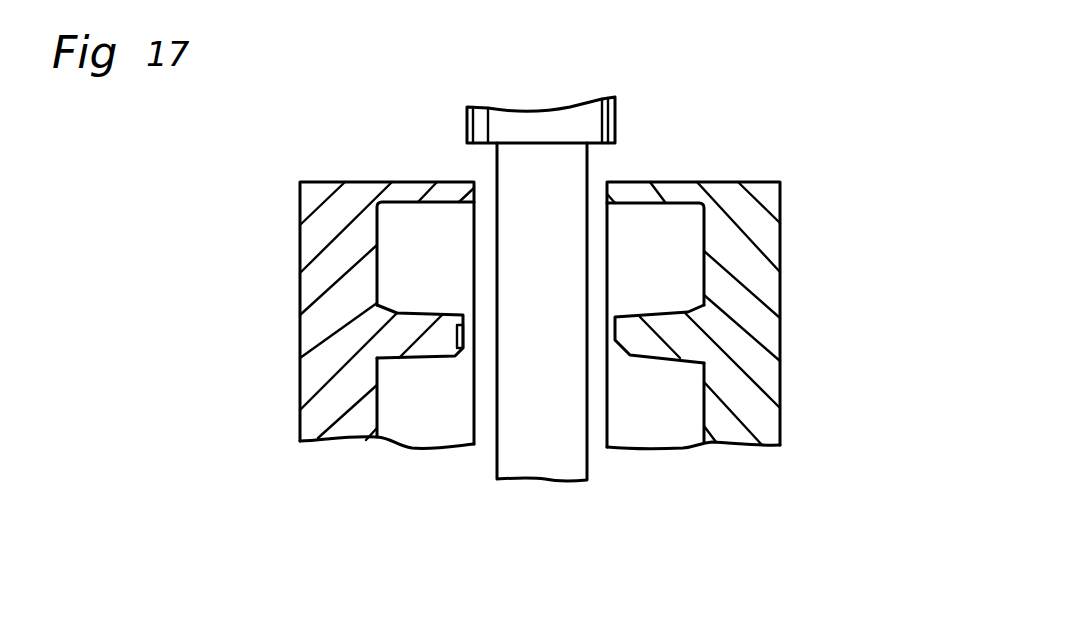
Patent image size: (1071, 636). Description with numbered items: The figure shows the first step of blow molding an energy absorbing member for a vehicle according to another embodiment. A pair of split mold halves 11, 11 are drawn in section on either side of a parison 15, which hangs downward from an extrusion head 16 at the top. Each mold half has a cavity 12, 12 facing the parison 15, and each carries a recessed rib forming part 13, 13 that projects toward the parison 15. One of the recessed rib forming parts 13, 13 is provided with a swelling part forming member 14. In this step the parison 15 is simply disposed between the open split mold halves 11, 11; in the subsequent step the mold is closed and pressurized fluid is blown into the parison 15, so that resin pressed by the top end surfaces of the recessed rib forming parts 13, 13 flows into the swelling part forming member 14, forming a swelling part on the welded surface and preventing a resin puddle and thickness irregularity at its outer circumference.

The split mold half 11 is at (318, 234).
The cavity 12 is at (377, 253).
The recessed rib forming part 13 is at (420, 345).
The swelling part forming member 14 is at (466, 345).
The parison 15 is at (538, 453).
The extrusion head 16 is at (617, 122).